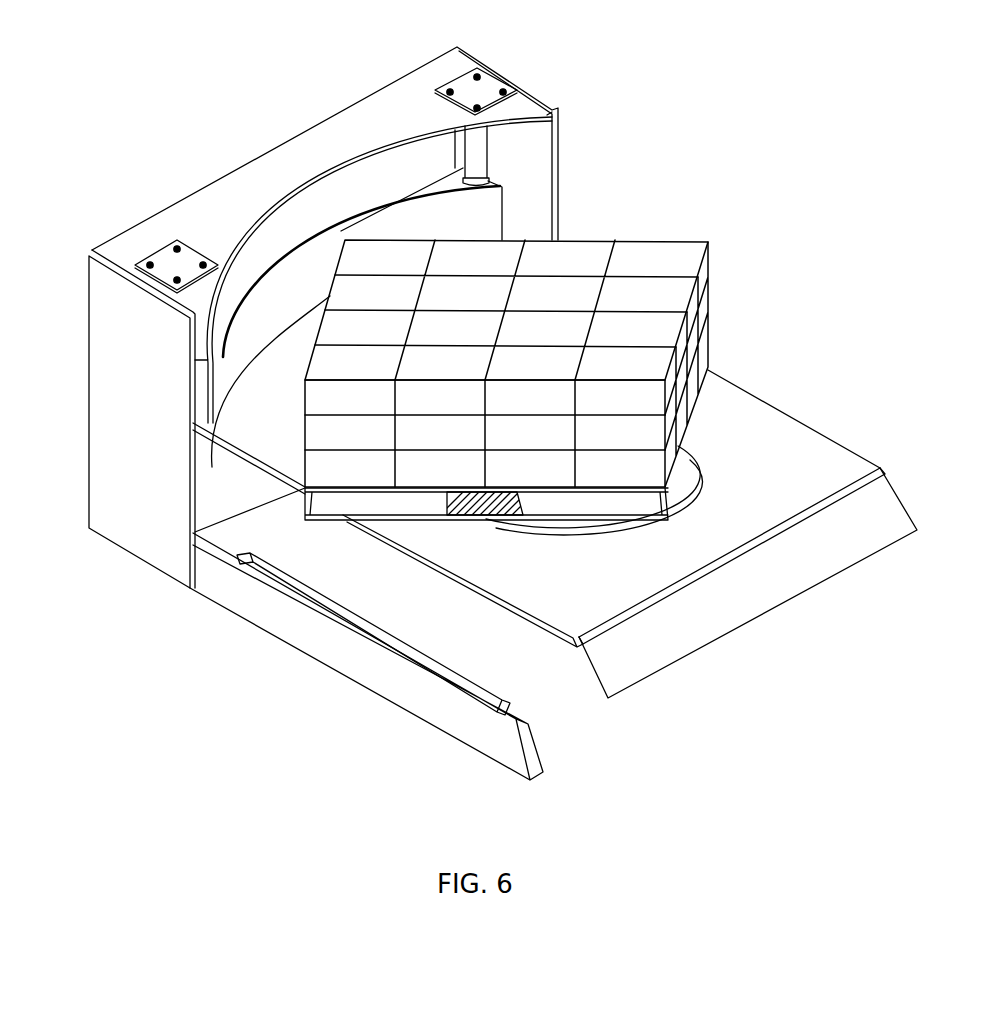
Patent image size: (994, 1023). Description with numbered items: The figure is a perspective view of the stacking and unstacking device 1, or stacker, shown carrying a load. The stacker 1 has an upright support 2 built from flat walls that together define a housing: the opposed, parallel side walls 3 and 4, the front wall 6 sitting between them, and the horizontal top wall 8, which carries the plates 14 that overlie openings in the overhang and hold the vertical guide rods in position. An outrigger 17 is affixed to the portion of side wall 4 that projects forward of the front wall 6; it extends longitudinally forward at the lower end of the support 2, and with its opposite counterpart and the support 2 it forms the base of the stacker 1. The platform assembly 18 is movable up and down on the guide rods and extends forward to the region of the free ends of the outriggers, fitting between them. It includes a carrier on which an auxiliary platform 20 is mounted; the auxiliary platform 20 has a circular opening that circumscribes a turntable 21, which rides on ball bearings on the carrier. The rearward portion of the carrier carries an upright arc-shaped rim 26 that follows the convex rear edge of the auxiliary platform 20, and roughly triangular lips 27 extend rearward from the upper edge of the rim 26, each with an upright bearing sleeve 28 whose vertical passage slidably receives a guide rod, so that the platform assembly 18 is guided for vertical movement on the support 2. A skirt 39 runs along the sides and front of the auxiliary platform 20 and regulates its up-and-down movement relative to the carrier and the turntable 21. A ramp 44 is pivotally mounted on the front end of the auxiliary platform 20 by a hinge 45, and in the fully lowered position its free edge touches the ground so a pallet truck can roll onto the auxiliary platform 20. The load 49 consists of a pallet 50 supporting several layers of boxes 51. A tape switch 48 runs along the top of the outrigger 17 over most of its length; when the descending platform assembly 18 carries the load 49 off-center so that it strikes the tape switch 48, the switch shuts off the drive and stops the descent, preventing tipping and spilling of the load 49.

The stacking and unstacking device 1 is at (80, 577).
The upright support 2 is at (78, 536).
The side wall 3 is at (150, 437).
The side wall 4 is at (560, 140).
The front wall 6 is at (330, 222).
The top wall 8 is at (308, 177).
The plate 14 is at (152, 250).
The outrigger 17 is at (478, 750).
The platform assembly 18 is at (783, 390).
The auxiliary platform 20 is at (708, 538).
The turntable 21 is at (692, 466).
The rim 26 is at (263, 398).
The lip 27 is at (252, 280).
The bearing sleeve 28 is at (488, 150).
The skirt 39 is at (460, 584).
The ramp 44 is at (722, 641).
The hinge 45 is at (885, 470).
The tape switch 48 is at (480, 686).
The load 49 is at (722, 232).
The pallet 50 is at (331, 519).
The box 51 is at (627, 255).